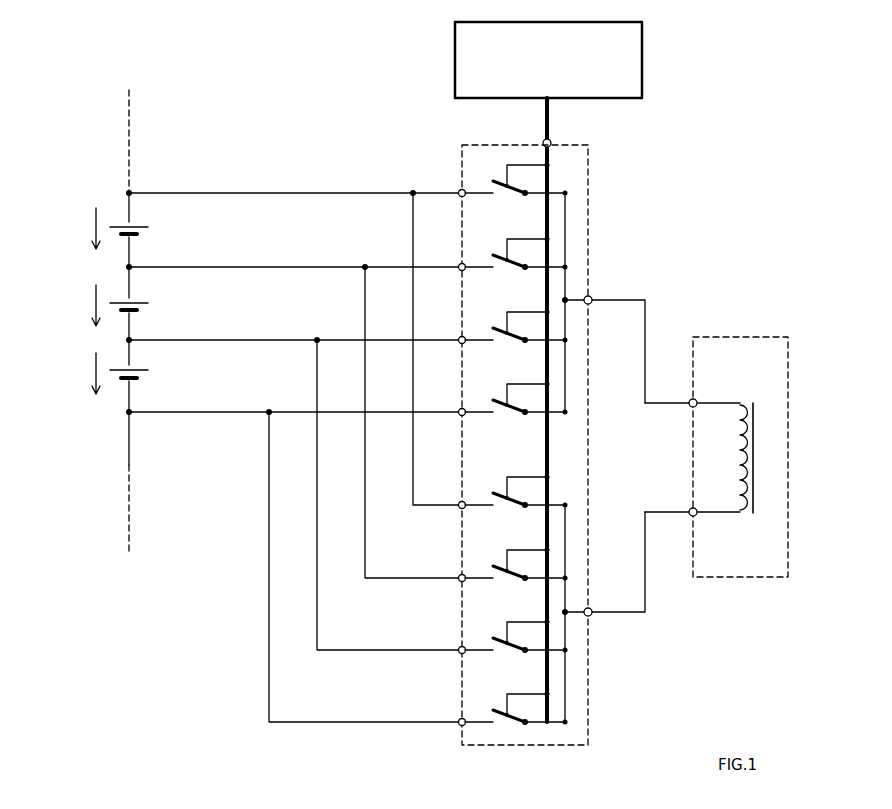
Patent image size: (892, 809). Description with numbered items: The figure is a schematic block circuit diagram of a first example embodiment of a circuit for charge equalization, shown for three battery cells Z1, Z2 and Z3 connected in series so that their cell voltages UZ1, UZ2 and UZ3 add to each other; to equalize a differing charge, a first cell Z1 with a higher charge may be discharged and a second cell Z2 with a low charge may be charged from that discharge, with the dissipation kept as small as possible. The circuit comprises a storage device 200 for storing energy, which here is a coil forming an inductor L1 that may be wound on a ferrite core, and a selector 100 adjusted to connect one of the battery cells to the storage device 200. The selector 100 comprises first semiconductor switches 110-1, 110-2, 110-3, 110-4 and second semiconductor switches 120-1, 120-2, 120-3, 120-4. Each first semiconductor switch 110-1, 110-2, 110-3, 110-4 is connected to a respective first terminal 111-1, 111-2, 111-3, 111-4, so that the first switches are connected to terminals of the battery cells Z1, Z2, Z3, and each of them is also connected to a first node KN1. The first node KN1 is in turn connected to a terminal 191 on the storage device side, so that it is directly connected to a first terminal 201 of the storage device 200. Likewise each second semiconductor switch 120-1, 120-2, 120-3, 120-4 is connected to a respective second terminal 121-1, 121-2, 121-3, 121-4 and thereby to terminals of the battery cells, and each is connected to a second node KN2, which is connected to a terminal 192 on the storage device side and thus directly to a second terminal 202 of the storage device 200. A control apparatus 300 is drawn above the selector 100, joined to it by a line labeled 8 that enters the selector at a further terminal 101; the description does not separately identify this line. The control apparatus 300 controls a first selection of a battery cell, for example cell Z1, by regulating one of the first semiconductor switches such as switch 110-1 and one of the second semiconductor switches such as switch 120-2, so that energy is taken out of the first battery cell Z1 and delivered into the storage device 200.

The control apparatus 300 is at (568, 72).
The common supply line 8 is at (549, 130).
The terminal 101 is at (552, 141).
The selector 100 is at (590, 690).
The battery cell Z1 is at (138, 242).
The battery cell Z2 is at (138, 318).
The battery cell Z3 is at (138, 386).
The cell voltage UZ1 is at (75, 228).
The cell voltage UZ2 is at (75, 305).
The cell voltage UZ3 is at (75, 373).
The first terminal 111-1 is at (459, 191).
The first terminal 111-2 is at (459, 265).
The first terminal 111-3 is at (459, 338).
The first terminal 111-4 is at (459, 410).
The first semiconductor switch 110-1 is at (509, 189).
The first semiconductor switch 110-2 is at (509, 263).
The first semiconductor switch 110-3 is at (509, 336).
The first semiconductor switch 110-4 is at (509, 408).
The second terminal 121-1 is at (459, 503).
The second terminal 121-2 is at (459, 576).
The second terminal 121-3 is at (459, 648).
The second terminal 121-4 is at (459, 720).
The second semiconductor switch 120-1 is at (509, 501).
The second semiconductor switch 120-2 is at (509, 574).
The second semiconductor switch 120-3 is at (509, 646).
The second semiconductor switch 120-4 is at (509, 718).
The first node KN1 is at (572, 296).
The second node KN2 is at (572, 608).
The terminal 191 is at (596, 296).
The terminal 192 is at (596, 616).
The storage device 200 is at (712, 334).
The first terminal 201 is at (690, 399).
The second terminal 202 is at (689, 518).
The inductor L1 is at (726, 468).